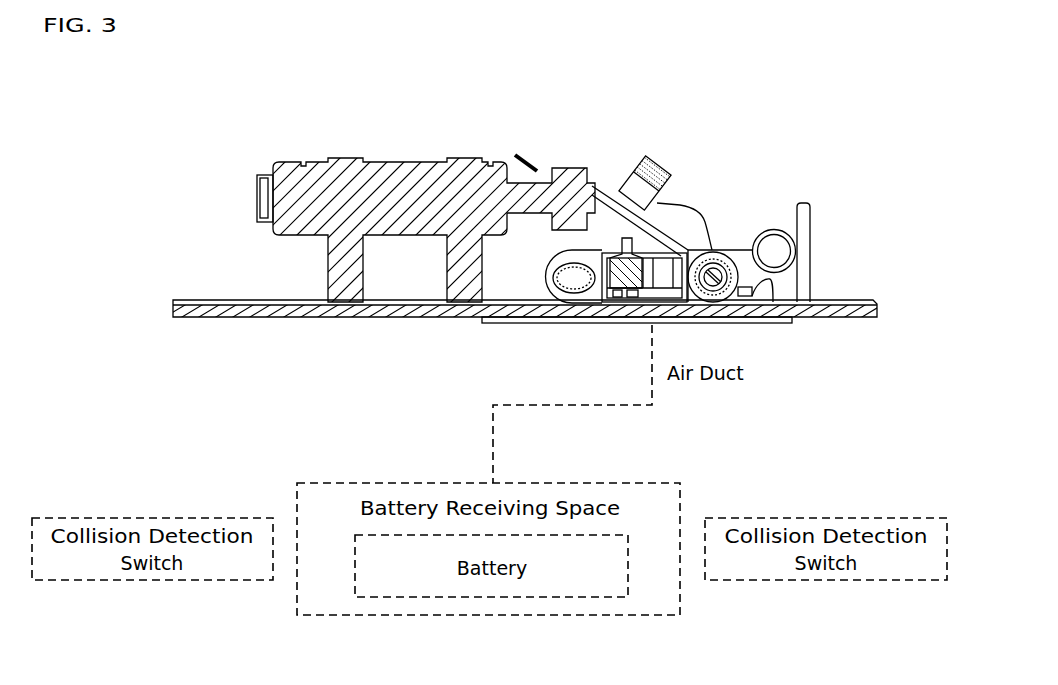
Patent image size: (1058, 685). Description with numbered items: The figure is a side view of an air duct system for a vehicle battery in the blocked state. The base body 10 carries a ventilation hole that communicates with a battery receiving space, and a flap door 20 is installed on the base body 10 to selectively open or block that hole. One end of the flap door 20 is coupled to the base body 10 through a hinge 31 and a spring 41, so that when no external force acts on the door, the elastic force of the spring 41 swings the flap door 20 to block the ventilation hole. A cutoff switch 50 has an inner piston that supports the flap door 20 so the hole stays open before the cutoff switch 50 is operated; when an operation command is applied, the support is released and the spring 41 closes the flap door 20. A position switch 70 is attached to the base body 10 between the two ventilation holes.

The base body 10 is at (205, 310).
The flap door 20 is at (682, 208).
The hinge 31 is at (773, 245).
The spring 41 is at (810, 238).
The cutoff switch 50 is at (348, 160).
The position switch 70 is at (597, 297).